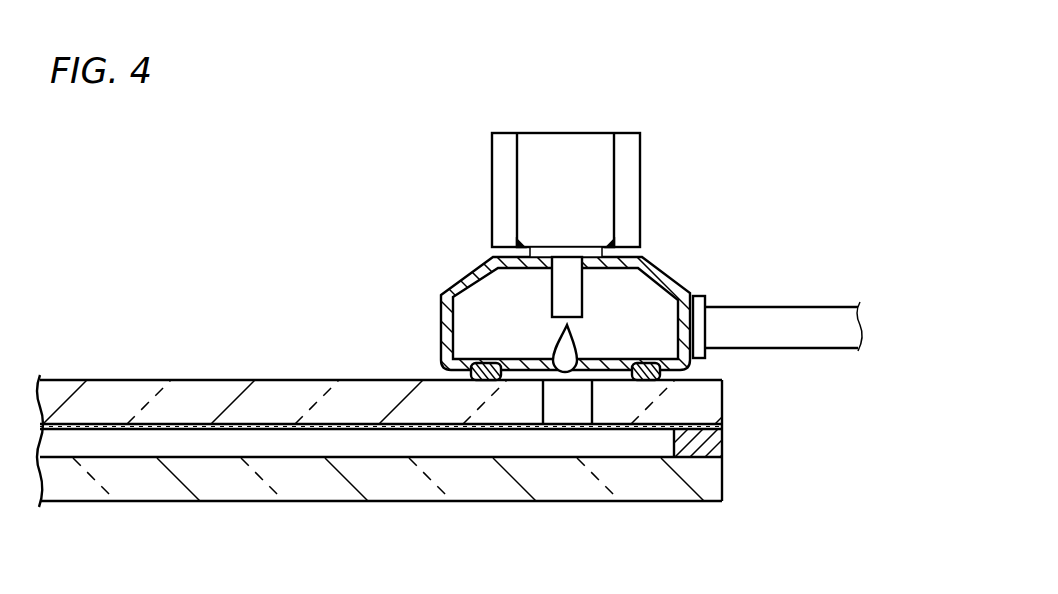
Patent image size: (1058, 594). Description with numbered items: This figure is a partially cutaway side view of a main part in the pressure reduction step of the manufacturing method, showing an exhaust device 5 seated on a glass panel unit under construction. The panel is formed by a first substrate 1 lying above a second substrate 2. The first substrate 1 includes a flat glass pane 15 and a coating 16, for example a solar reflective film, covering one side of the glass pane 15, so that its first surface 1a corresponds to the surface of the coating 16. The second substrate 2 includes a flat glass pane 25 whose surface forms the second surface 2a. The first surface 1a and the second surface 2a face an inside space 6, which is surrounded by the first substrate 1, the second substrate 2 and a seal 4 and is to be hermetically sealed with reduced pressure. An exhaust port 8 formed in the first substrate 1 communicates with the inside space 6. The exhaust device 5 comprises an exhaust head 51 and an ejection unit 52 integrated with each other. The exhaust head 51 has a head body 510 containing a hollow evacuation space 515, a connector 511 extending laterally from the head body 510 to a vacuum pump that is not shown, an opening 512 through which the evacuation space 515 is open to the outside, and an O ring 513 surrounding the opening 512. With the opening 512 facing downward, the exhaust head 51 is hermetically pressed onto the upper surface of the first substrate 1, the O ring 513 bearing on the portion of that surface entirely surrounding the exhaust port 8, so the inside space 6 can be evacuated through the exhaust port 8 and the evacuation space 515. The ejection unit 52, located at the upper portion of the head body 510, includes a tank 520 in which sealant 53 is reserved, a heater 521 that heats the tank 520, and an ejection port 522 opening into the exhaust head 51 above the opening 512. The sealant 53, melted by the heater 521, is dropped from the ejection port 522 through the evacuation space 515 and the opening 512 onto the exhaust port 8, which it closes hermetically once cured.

The first substrate 1 is at (95, 387).
The glass pane 15 is at (173, 398).
The first surface 1a is at (256, 431).
The coating 16 is at (342, 425).
The second substrate 2 is at (77, 493).
The glass pane 25 is at (142, 482).
The second surface 2a is at (228, 457).
The inside space 6 is at (390, 447).
The exhaust port 8 is at (568, 410).
The seal 4 is at (710, 447).
The exhaust device 5 is at (571, 234).
The exhaust head 51 is at (655, 270).
The head body 510 is at (675, 282).
The connector 511 is at (793, 317).
The opening 512 is at (540, 362).
The O ring 513 is at (647, 362).
The evacuation space 515 is at (478, 311).
The ejection unit 52 is at (597, 170).
The tank 520 is at (550, 163).
The heater 521 is at (632, 187).
The ejection port 522 is at (550, 325).
The sealant 53 is at (573, 346).